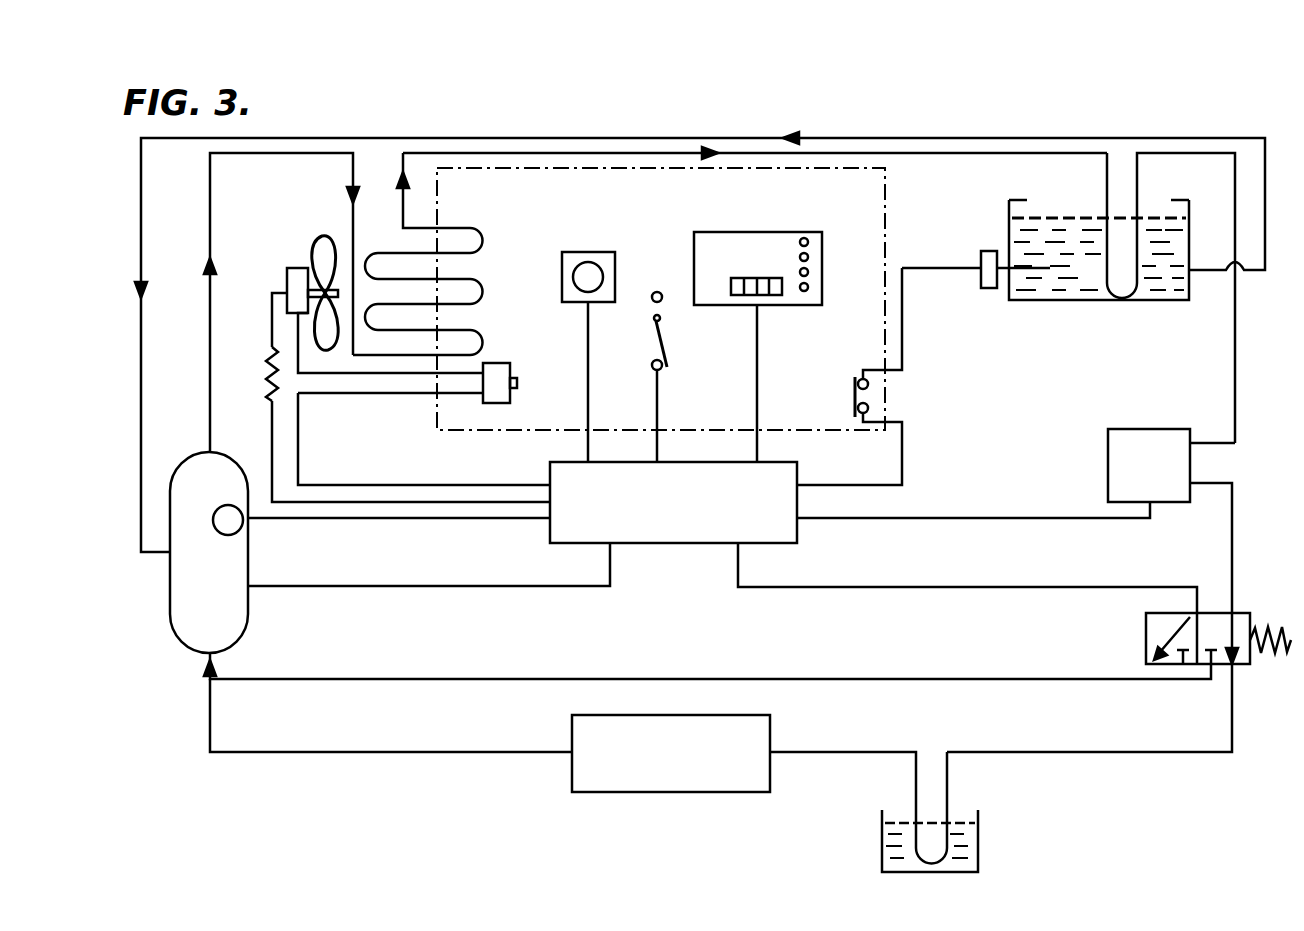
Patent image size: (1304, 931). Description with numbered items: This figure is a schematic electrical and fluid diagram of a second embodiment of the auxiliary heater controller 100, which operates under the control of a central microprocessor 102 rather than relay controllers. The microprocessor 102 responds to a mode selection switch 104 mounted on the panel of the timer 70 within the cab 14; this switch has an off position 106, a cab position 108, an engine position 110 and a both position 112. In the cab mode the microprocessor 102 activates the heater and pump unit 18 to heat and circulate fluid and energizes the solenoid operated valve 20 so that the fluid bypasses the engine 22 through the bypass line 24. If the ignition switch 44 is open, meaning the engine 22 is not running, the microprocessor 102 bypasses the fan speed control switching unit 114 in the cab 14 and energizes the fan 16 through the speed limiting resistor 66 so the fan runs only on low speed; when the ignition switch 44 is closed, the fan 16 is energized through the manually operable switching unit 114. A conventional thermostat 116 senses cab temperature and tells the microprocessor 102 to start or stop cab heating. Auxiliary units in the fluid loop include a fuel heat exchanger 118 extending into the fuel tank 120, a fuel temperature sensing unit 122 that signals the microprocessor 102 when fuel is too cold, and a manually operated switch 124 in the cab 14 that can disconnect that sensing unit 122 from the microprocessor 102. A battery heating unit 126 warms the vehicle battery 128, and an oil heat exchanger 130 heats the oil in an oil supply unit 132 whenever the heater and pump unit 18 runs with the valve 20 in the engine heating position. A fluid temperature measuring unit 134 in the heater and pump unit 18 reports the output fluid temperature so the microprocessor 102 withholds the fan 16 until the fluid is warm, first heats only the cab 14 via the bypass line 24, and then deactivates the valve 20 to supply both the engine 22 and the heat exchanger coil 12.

The heat exchanger coil 12 is at (482, 242).
The cab 14 is at (878, 201).
The fan 16 is at (294, 268).
The heater and pump unit 18 is at (172, 485).
The solenoid operated valve 20 is at (1146, 625).
The engine 22 is at (731, 780).
The bypass line 24 is at (600, 679).
The ignition switch 44 is at (668, 356).
The speed limiting resistor 66 is at (266, 388).
The timer 70 is at (783, 326).
The auxiliary heater controller 100 is at (1222, 792).
The microprocessor 102 is at (712, 530).
The mode selection switch 104 is at (786, 322).
The off position 106 is at (808, 290).
The cab position 108 is at (808, 272).
The engine position 110 is at (808, 257).
The both position 112 is at (805, 238).
The fan speed control switching unit 114 is at (506, 398).
The thermostat 116 is at (602, 252).
The fuel heat exchanger 118 is at (1105, 165).
The fuel tank 120 is at (1073, 287).
The fuel temperature sensing unit 122 is at (988, 288).
The manually operated switch 124 is at (852, 398).
The battery heating unit 126 is at (1212, 487).
The vehicle battery 128 is at (1108, 484).
The oil heat exchanger 130 is at (948, 777).
The oil supply unit 132 is at (978, 843).
The fluid temperature measuring unit 134 is at (238, 532).